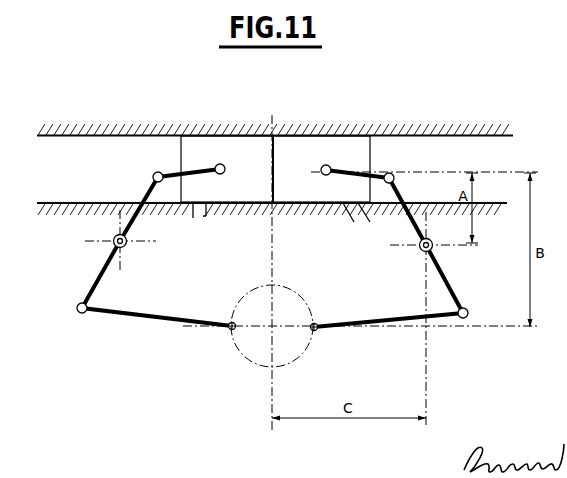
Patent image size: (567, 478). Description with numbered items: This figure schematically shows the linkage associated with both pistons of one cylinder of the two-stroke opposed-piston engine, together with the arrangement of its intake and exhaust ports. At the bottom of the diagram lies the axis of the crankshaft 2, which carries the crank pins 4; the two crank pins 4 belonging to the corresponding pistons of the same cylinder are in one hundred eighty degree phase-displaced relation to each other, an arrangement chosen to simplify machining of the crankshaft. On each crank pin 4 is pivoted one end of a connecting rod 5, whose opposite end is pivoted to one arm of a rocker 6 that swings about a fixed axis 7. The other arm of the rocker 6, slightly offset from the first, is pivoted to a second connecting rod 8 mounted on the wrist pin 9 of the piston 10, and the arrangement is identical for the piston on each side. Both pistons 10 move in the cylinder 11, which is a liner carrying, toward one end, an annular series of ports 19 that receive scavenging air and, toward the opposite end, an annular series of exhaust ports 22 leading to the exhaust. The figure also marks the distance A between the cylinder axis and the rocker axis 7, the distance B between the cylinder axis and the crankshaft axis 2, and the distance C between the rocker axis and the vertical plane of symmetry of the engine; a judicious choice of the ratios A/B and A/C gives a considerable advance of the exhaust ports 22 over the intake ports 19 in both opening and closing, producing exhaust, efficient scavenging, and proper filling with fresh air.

The crankshaft 2 is at (272, 326).
The crank pin 4 is at (229, 330).
The connecting rod 5 is at (143, 318).
The rocker 6 is at (143, 196).
The fixed axis 7 is at (113, 245).
The connecting rod 8 is at (197, 169).
The wrist pin 9 is at (221, 164).
The piston 10 is at (298, 165).
The cylinder 11 is at (420, 136).
The ports 19 is at (351, 214).
The exhaust ports 22 is at (198, 218).